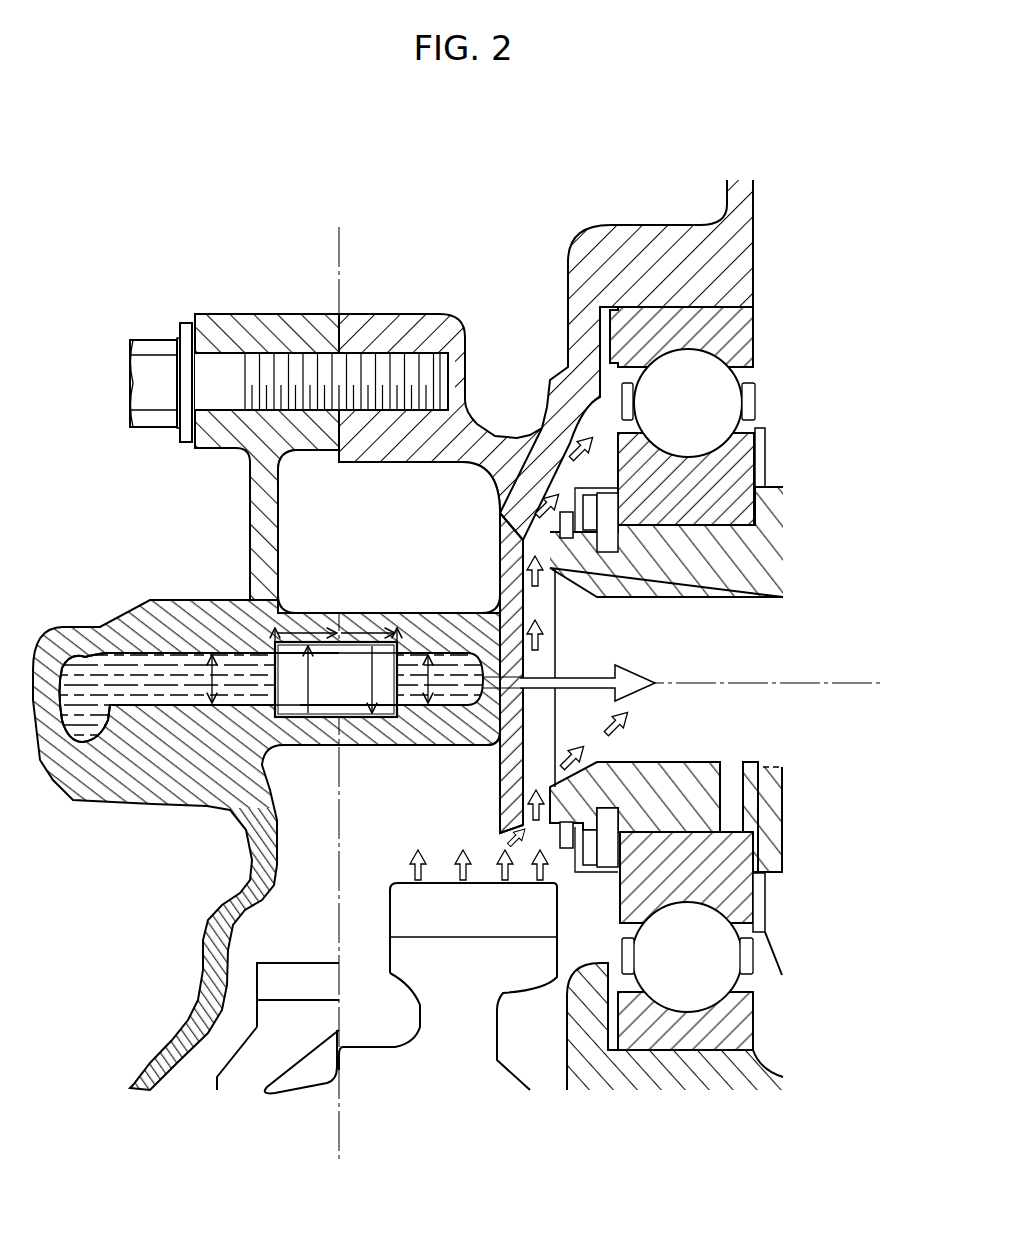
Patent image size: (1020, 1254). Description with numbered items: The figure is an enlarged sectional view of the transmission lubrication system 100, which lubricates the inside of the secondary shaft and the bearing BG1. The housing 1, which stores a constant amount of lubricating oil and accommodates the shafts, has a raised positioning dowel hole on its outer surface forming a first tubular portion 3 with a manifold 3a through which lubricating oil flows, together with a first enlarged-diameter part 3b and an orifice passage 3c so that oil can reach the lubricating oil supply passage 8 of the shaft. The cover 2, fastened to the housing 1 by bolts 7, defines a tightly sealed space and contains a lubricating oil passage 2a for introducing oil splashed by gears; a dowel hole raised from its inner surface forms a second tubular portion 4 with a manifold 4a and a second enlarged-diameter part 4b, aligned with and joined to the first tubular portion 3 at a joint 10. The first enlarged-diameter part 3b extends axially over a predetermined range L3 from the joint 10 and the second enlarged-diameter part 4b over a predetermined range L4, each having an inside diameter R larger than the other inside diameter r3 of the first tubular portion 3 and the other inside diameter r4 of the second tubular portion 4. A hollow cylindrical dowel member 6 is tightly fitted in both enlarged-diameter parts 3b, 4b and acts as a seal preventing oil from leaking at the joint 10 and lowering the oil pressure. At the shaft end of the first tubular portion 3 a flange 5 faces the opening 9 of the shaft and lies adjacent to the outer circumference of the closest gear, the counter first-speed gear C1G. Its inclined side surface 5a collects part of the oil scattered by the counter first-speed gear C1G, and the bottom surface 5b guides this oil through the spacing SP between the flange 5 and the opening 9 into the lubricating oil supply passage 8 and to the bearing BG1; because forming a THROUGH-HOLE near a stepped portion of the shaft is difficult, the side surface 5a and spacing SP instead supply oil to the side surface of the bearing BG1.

The transmission lubrication system 100 is at (390, 192).
The housing 1 is at (558, 292).
The cover 2 is at (279, 310).
The lubricating oil passage 2a is at (78, 667).
The first tubular portion 3 is at (374, 609).
The manifold 3a is at (445, 660).
The first enlarged-diameter part 3b is at (370, 719).
The orifice passage 3c is at (482, 742).
The second tubular portion 4 is at (325, 612).
The manifold 4a is at (172, 667).
The second enlarged-diameter part 4b is at (323, 719).
The flange 5 is at (496, 792).
The side surface 5a is at (524, 837).
The bottom surface 5b is at (575, 742).
The dowel member 6 is at (385, 719).
The bolts 7 is at (165, 328).
The lubricating oil supply passage 8 is at (730, 637).
The opening 9 is at (567, 660).
The joint 10 is at (343, 751).
The bearing BG1 is at (732, 490).
The counter first-speed gear C1G is at (460, 1042).
The spacing SP is at (538, 605).
The inside diameter R is at (336, 679).
The inside diameter r3 is at (443, 679).
The inside diameter r4 is at (197, 679).
The predetermined range L3 is at (380, 632).
The predetermined range L4 is at (333, 632).
The through-hole THROUGH-HOLE is at (734, 792).